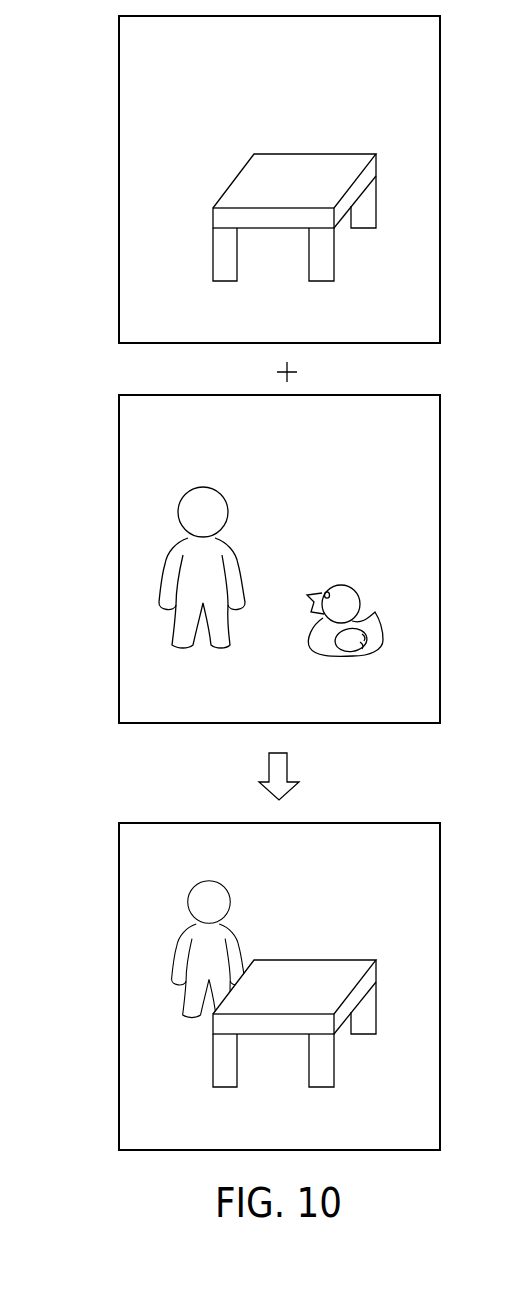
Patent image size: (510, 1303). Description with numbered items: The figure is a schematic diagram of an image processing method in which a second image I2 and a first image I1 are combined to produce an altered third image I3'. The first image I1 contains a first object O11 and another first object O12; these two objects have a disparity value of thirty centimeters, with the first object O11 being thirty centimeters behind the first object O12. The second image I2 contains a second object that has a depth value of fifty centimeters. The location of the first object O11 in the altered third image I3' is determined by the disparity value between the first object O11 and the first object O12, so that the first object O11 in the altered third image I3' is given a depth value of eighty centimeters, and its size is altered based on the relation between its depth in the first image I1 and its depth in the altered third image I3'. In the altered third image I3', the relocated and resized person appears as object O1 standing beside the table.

The second image I2 is at (119, 180).
The first image I1 is at (119, 560).
The altered third image I3' is at (230, 986).
The first object O11 is at (208, 511).
The first object O12 is at (347, 595).
The person object O1 is at (215, 899).